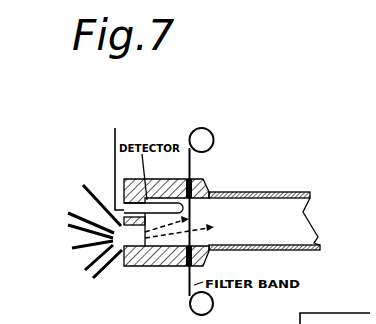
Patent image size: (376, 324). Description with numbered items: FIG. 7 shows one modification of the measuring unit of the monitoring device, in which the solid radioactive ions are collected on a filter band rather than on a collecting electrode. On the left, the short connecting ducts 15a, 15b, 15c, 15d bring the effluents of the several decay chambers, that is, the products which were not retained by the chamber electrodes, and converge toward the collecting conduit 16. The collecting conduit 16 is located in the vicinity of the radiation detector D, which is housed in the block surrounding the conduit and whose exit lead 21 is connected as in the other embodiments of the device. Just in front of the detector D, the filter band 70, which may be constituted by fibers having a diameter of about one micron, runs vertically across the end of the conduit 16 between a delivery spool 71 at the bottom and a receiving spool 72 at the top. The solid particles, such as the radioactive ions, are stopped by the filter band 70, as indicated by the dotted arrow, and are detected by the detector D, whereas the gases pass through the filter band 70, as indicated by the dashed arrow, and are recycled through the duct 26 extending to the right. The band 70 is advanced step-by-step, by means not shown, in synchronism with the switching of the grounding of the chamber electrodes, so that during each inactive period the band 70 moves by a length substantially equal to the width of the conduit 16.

The connecting duct 15a is at (82, 197).
The connecting duct 15b is at (76, 227).
The connecting duct 15c is at (82, 258).
The connecting duct 15d is at (103, 275).
The collecting conduit 16 is at (173, 240).
The exit lead 21 is at (113, 148).
The duct 26 is at (277, 192).
The filter band 70 is at (190, 164).
The delivery spool 71 is at (213, 303).
The receiving spool 72 is at (212, 134).
The radiation detector D is at (151, 208).